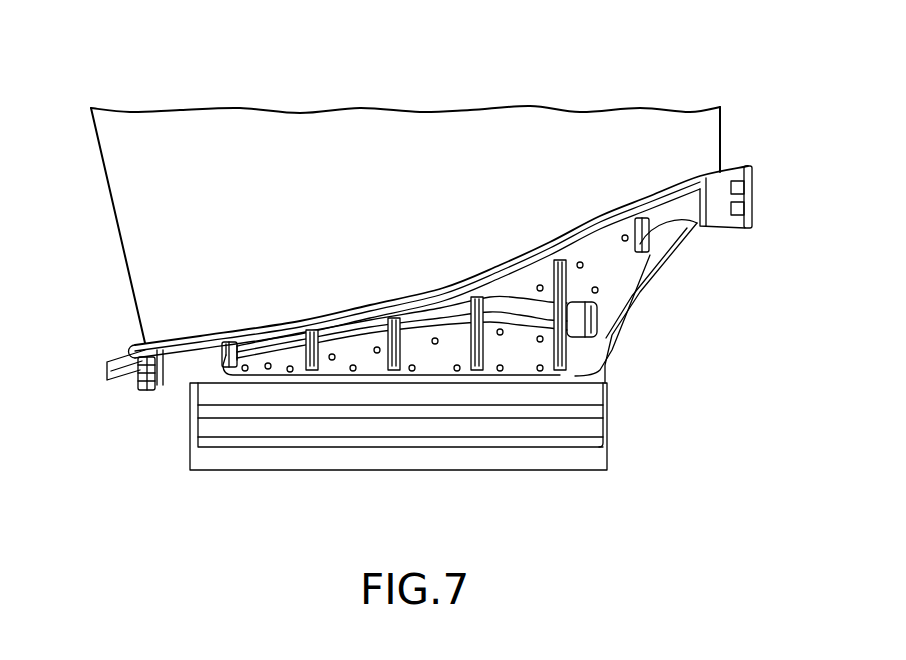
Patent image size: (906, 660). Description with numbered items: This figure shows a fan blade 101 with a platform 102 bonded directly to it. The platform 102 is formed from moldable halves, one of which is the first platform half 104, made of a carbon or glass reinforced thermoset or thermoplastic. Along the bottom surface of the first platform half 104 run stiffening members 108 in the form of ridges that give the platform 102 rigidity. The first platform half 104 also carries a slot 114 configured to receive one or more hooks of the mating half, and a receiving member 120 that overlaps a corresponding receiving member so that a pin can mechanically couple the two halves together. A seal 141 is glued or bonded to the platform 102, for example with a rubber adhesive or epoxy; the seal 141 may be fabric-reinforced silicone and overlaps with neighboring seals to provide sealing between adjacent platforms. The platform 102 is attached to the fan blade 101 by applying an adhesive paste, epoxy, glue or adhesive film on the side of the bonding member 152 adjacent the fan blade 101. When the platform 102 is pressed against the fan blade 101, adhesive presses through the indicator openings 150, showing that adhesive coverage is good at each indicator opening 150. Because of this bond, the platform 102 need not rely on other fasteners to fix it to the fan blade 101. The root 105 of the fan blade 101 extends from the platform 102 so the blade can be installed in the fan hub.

The fan blade 101 is at (317, 130).
The platform 102 is at (749, 166).
The first platform half 104 is at (610, 292).
The root 105 is at (578, 428).
The stiffening members 108 is at (477, 362).
The slot 114 is at (175, 365).
The receiving member 120 is at (713, 210).
The seal 141 is at (107, 372).
The indicator openings 150 is at (578, 384).
The bonding member 152 is at (605, 305).